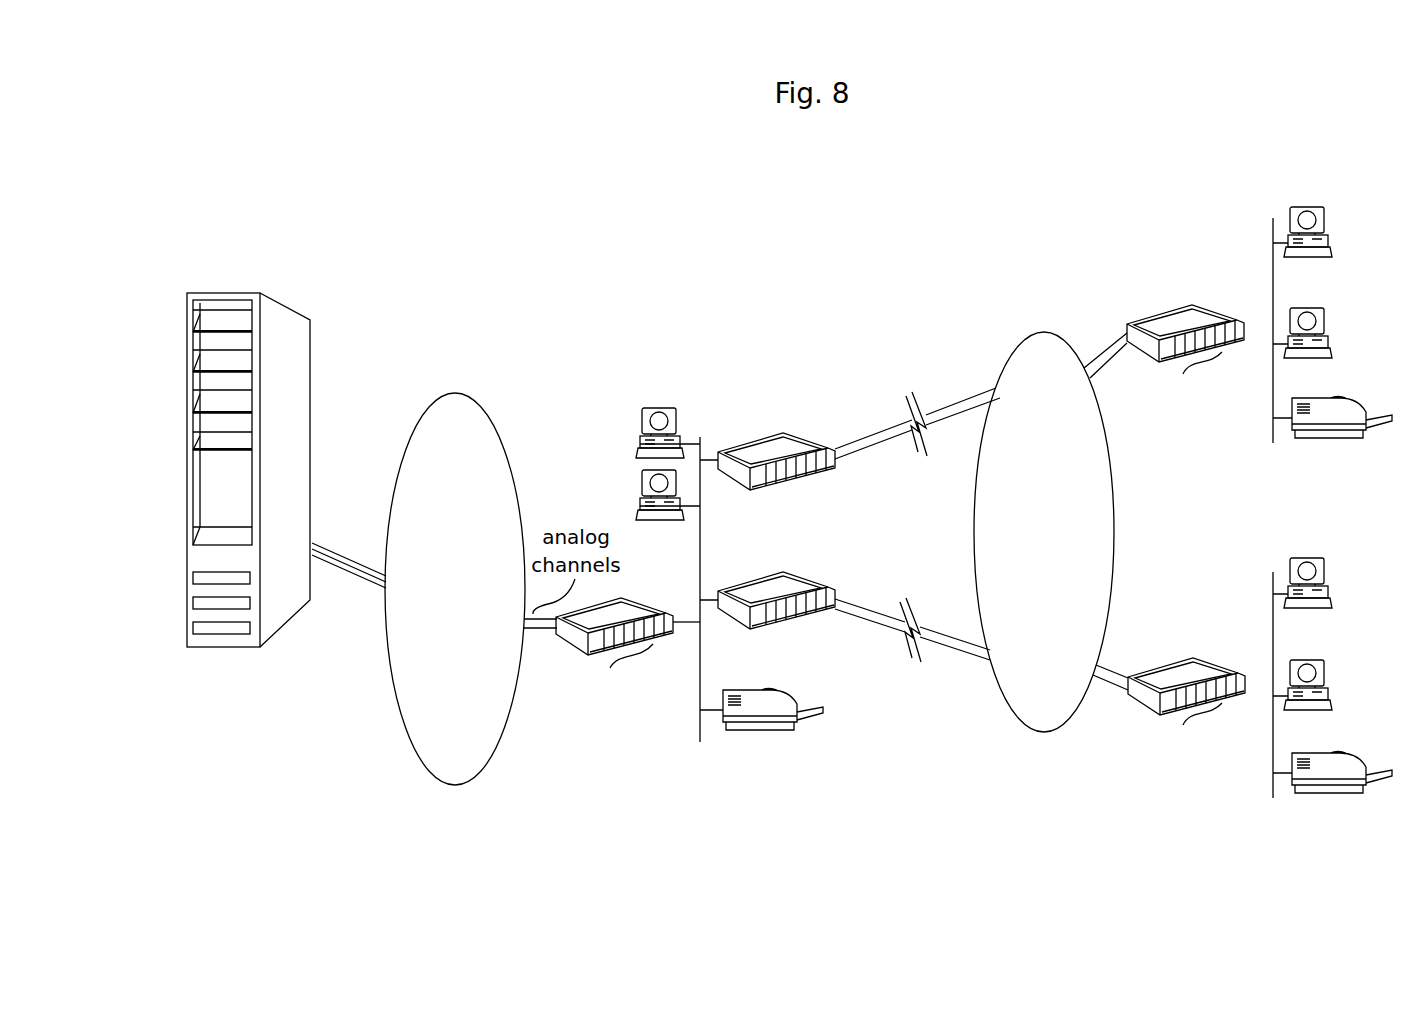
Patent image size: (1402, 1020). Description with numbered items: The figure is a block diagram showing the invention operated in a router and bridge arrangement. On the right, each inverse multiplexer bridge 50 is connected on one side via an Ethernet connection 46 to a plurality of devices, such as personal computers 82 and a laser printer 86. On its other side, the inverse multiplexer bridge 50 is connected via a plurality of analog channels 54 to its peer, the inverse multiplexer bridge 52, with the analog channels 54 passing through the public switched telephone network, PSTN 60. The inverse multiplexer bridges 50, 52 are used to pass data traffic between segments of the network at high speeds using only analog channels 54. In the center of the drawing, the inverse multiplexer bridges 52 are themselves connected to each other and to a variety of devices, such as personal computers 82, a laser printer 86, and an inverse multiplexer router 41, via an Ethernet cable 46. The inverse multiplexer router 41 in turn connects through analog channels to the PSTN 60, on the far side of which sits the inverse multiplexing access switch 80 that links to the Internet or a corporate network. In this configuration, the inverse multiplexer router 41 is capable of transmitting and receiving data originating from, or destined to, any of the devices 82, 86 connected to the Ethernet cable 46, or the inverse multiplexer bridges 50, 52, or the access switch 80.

The access switch 80 is at (257, 293).
The PSTN 60 is at (442, 657).
The inverse multiplexer router 41 is at (665, 612).
The Ethernet cable 46 is at (700, 736).
The personal computers 82 is at (642, 420).
The laser printer 86 is at (747, 690).
The inverse multiplexer bridge 52 is at (764, 419).
The analog channels 54 is at (858, 441).
The inverse multiplexer bridge 50 is at (1220, 316).